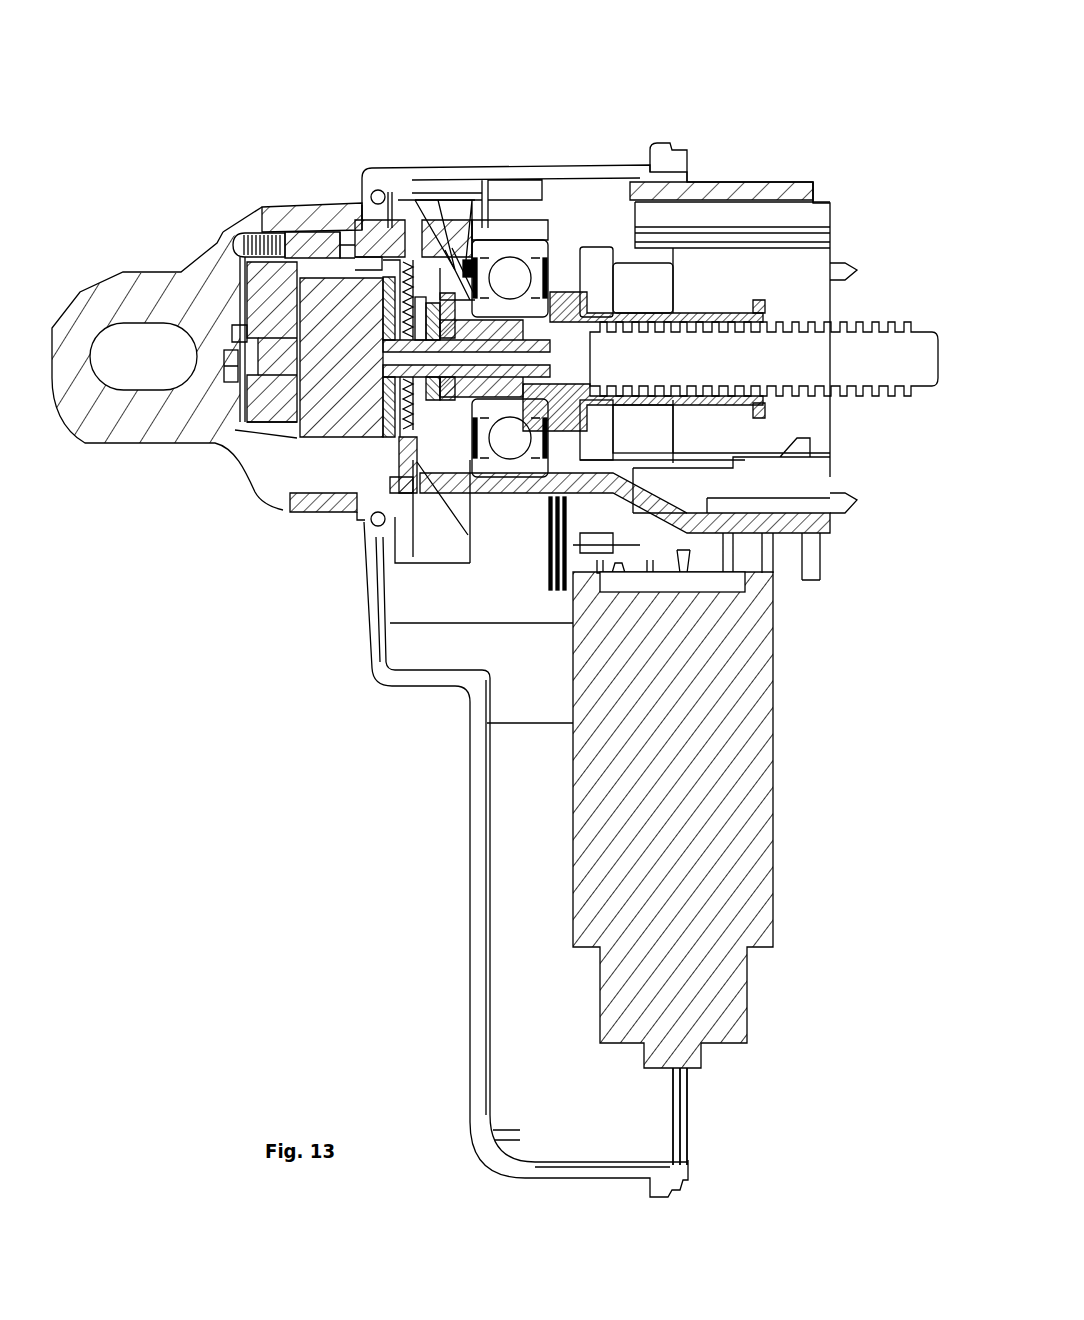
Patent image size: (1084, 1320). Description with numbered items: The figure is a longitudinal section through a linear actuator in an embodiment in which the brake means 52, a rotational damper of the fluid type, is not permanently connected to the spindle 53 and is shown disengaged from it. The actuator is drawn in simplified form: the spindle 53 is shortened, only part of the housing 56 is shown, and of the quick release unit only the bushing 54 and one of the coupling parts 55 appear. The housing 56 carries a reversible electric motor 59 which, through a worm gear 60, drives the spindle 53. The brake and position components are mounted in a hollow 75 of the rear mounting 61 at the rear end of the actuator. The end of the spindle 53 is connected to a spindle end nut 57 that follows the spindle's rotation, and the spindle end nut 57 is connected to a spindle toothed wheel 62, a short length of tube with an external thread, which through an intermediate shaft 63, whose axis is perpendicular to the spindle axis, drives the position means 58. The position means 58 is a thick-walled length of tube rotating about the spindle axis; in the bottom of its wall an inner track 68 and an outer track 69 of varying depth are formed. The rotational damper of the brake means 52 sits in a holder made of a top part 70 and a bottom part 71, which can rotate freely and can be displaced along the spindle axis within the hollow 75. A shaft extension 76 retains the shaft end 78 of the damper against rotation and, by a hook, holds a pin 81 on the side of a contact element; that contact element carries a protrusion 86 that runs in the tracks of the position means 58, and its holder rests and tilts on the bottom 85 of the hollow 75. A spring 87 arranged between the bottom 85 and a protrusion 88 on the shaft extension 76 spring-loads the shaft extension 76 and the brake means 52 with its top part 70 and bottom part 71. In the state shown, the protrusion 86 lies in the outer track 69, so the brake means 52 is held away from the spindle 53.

The brake means 52 is at (312, 412).
The spindle 53 is at (908, 350).
The bushing 54 is at (760, 300).
The coupling part 55 is at (616, 293).
The housing 56 is at (667, 170).
The spindle end nut 57 is at (488, 275).
The position means 58 is at (370, 232).
The reversible electric motor 59 is at (752, 828).
The worm gear 60 is at (587, 277).
The rear mounting 61 is at (102, 413).
The spindle toothed wheel 62 is at (472, 296).
The intermediate shaft 63 is at (433, 250).
The inner track 68 is at (352, 227).
The outer track 69 is at (372, 228).
The top part 70 is at (387, 445).
The bottom part 71 is at (340, 445).
The hollow 75 is at (303, 227).
The shaft extension 76 is at (263, 403).
The shaft end 78 is at (300, 422).
The pin 81 is at (262, 240).
The bottom 85 is at (253, 238).
The protrusion 86 is at (350, 227).
The spring 87 is at (218, 350).
The protrusion 88 is at (233, 353).